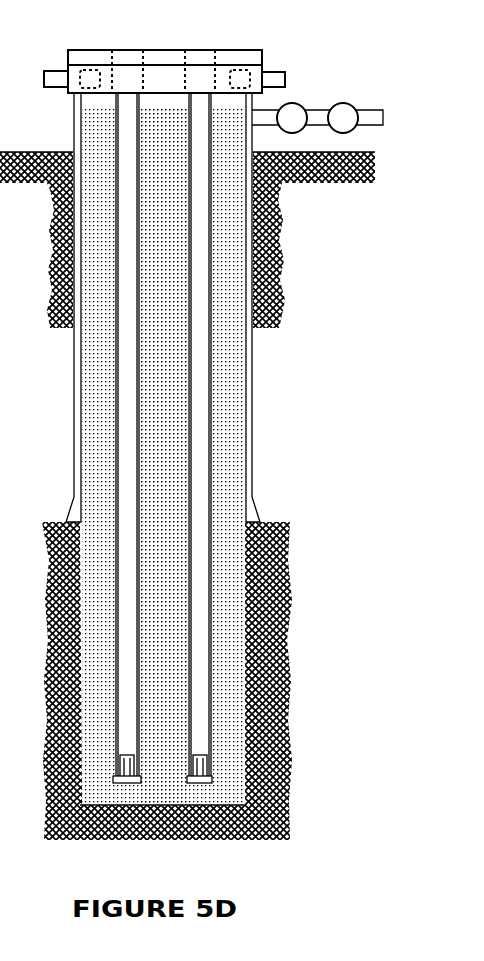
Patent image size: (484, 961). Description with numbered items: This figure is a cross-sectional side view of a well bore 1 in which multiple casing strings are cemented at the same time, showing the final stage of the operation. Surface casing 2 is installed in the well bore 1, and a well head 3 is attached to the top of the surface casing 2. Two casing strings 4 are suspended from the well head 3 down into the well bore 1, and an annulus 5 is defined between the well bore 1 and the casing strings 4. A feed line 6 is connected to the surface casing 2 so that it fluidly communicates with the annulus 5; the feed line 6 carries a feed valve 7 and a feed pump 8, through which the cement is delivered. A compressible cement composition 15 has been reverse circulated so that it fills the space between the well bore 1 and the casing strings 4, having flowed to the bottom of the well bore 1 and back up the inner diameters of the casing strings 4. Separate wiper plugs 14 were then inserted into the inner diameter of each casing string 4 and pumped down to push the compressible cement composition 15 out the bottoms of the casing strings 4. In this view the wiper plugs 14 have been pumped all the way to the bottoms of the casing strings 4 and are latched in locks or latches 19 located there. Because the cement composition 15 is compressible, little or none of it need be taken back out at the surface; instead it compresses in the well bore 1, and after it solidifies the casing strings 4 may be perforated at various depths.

The well bore 1 is at (236, 600).
The surface casing 2 is at (250, 347).
The well head 3 is at (255, 50).
The casing strings 4 is at (217, 387).
The annulus 5 is at (232, 296).
The feed line 6 is at (320, 118).
The feed valve 7 is at (290, 110).
The feed pump 8 is at (345, 108).
The wiper plugs 14 is at (210, 752).
The compressible cement composition 15 is at (232, 215).
The locks or latches 19 is at (217, 801).